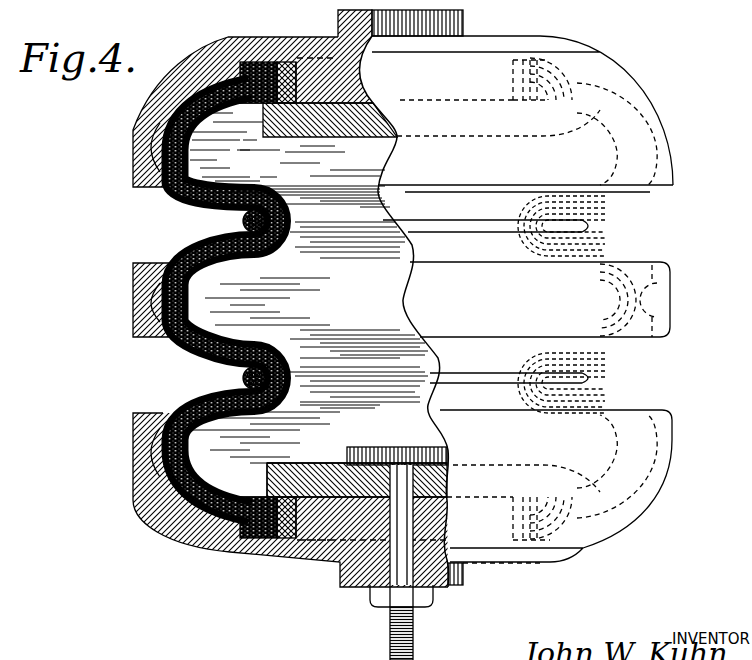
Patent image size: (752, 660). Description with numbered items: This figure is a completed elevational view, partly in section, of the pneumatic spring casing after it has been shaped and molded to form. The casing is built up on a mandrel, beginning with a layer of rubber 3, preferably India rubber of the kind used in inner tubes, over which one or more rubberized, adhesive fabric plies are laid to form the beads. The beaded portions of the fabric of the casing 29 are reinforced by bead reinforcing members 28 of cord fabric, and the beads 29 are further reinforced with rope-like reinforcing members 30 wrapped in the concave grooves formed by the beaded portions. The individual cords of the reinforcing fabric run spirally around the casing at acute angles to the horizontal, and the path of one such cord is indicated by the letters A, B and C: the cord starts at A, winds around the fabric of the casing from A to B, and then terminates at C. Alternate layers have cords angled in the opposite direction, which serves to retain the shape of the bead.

The layer of rubber 3 is at (197, 177).
The bead reinforcing member 28 is at (200, 213).
The beaded portions of the fabric of the casing 29 is at (332, 357).
The rope-like reinforcing member 30 is at (220, 371).
The starting position of individual cord A is at (203, 203).
The intermediate position of individual cord B is at (543, 221).
The terminating position of individual cord C is at (200, 250).